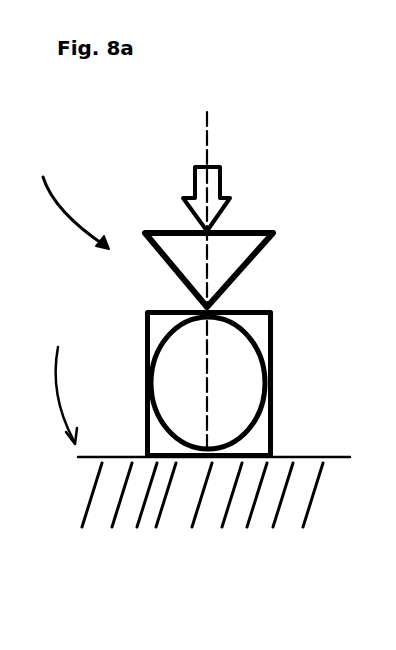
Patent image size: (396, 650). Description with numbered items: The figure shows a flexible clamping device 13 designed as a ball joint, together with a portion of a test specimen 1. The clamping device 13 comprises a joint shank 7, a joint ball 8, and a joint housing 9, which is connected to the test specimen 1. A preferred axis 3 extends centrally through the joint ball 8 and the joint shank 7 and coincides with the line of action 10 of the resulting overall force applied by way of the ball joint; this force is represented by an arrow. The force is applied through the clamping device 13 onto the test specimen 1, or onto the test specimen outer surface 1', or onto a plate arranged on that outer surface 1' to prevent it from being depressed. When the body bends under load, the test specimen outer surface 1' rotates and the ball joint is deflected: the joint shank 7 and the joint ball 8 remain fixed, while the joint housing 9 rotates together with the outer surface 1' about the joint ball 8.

The test specimen 1 is at (66, 382).
The test specimen outer surface 1' is at (211, 451).
The preferred axis 3 is at (213, 130).
The joint shank 7 is at (241, 273).
The joint ball 8 is at (248, 337).
The joint housing 9 is at (273, 437).
The line of action 10 is at (235, 169).
The clamping device 13 is at (67, 199).